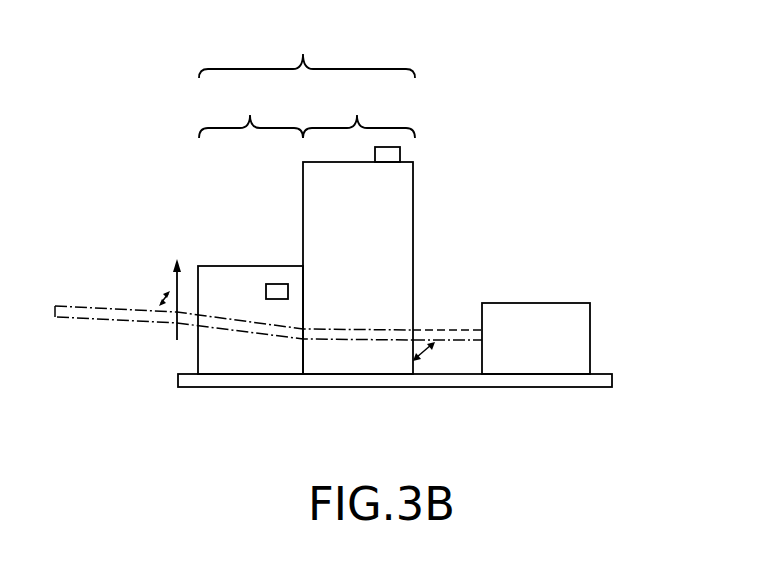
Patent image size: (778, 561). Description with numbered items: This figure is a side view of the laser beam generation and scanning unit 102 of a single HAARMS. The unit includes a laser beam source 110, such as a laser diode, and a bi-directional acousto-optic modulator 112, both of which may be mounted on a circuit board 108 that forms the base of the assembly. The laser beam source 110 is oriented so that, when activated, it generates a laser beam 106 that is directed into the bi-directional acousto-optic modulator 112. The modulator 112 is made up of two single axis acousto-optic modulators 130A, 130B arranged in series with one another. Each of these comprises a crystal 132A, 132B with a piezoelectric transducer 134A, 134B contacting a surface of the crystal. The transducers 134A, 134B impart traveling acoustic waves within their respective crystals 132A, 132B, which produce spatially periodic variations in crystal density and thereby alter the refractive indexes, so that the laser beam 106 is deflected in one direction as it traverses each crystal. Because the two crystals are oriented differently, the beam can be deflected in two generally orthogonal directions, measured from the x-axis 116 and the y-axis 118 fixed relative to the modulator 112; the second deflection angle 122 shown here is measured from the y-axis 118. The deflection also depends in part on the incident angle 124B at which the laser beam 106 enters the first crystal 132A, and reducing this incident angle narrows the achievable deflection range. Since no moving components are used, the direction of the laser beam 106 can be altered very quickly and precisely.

The laser beam generation and scanning unit 102 is at (556, 133).
The laser beam 106 is at (93, 308).
The circuit board 108 is at (612, 374).
The laser beam source 110 is at (558, 303).
The bi-directional acousto-optic modulator 112 is at (303, 54).
The x-axis 116 is at (177, 340).
The y-axis 118 is at (172, 262).
The second deflection angle 122 is at (163, 298).
The incident angle 124B is at (428, 352).
The single axis acousto-optic modulator 130A is at (357, 116).
The single axis acousto-optic modulator 130B is at (250, 116).
The crystal 132A is at (414, 207).
The crystal 132B is at (216, 266).
The piezoelectric transducer 134A is at (401, 156).
The piezoelectric transducer 134B is at (275, 284).